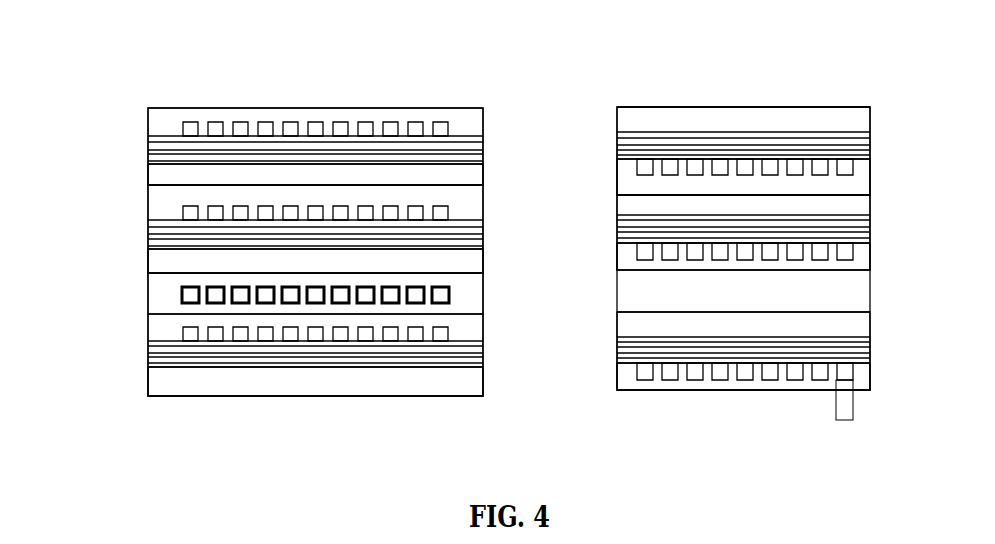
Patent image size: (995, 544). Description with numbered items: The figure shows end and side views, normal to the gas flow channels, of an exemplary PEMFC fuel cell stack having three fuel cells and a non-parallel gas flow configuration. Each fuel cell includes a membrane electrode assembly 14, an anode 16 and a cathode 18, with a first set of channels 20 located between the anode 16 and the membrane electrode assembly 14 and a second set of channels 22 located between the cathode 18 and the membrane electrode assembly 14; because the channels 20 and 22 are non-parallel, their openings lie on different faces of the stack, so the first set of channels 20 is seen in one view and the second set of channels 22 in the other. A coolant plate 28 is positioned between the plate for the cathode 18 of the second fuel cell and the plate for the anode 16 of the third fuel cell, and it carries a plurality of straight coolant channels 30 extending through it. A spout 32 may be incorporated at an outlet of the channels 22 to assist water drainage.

The membrane electrode assembly 14 is at (615, 145).
The anode 16 is at (615, 120).
The cathode 18 is at (615, 170).
The first set of channels 20 is at (370, 106).
The second set of channels 22 is at (765, 185).
The coolant plate 28 is at (148, 293).
The coolant channels 30 is at (322, 282).
The spout 32 is at (853, 408).